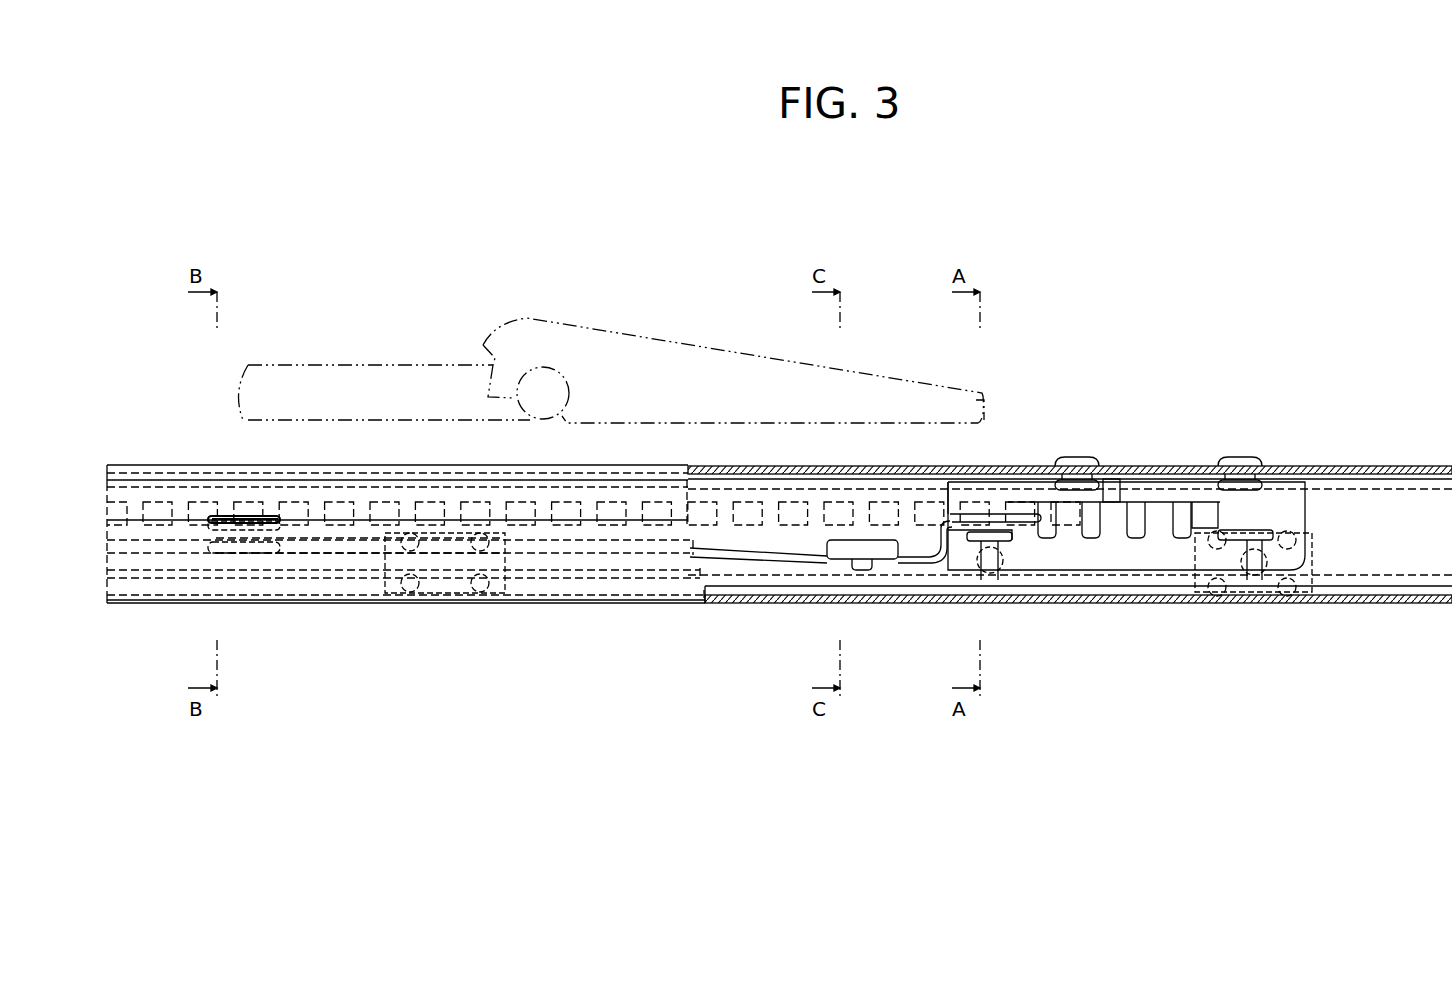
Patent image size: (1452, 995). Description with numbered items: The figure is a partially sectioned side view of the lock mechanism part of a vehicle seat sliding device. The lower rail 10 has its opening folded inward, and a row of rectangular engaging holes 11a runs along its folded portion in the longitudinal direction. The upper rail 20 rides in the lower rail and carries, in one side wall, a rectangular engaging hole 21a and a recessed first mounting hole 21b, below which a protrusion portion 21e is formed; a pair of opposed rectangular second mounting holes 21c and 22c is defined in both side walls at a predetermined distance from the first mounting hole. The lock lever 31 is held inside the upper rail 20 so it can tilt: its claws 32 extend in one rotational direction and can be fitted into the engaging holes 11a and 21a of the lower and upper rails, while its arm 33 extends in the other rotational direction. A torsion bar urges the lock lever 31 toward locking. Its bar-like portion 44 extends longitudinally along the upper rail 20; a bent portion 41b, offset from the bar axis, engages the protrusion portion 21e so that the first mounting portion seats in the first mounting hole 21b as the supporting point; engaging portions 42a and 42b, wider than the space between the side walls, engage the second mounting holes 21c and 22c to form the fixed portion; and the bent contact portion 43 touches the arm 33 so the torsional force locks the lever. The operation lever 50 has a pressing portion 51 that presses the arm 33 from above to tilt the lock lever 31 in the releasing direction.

The lower rail 10 is at (1177, 603).
The rectangular engaging holes 11a is at (795, 505).
The upper rail 20 is at (580, 466).
The rectangular engaging hole 21a is at (1112, 523).
The first mounting hole 21b is at (875, 540).
The second mounting hole 21c is at (270, 555).
The protrusion portion 21e is at (862, 560).
The second mounting hole 22c is at (260, 518).
The lock lever 31 is at (1068, 555).
The claws 32 is at (1160, 512).
The arm 33 is at (985, 512).
The bent portion 41b is at (870, 560).
The engaging portion 42a is at (217, 550).
The engaging portion 42b is at (223, 517).
The contact portion 43 is at (965, 520).
The bar-like portion 44 is at (745, 555).
The operation lever 50 is at (598, 308).
The pressing portion 51 is at (985, 440).